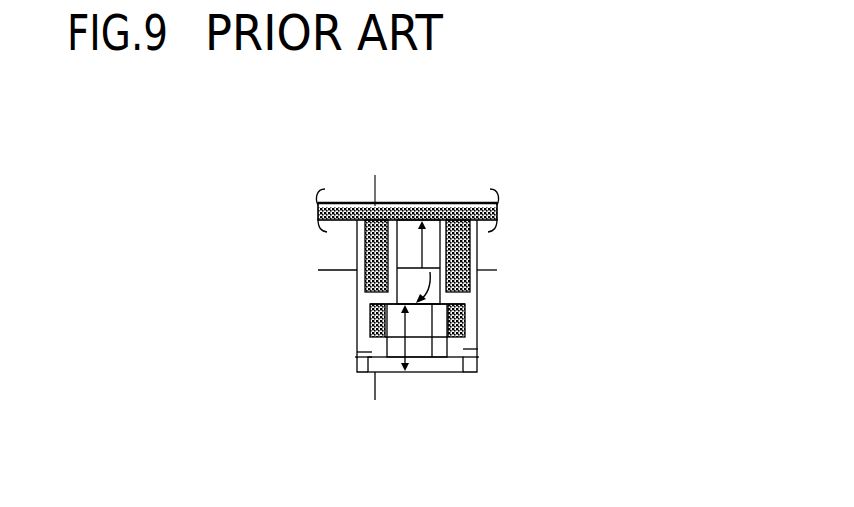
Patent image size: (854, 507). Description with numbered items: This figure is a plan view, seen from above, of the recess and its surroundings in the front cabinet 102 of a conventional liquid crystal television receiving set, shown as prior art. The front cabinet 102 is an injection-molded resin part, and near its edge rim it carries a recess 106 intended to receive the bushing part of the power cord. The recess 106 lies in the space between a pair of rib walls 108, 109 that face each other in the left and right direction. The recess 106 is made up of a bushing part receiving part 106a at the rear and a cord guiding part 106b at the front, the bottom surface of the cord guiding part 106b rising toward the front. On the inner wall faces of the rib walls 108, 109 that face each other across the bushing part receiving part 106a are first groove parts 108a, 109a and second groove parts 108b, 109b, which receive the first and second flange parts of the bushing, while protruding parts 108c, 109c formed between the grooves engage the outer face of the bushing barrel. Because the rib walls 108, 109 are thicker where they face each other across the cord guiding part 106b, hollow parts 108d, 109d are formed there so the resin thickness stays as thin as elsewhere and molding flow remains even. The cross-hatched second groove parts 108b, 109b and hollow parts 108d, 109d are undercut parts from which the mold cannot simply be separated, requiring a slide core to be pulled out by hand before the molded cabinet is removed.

The front cabinet 102 is at (425, 203).
The recess 106 is at (500, 427).
The bushing part receiving part 106a is at (392, 373).
The cord guiding part 106b is at (432, 357).
The rib wall 108 is at (357, 292).
The first groove part 108a is at (360, 370).
The second groove part 108b is at (370, 318).
The protruding part 108c is at (363, 353).
The hollow part 108d is at (365, 250).
The rib wall 109 is at (477, 292).
The first groove part 109a is at (477, 370).
The second groove part 109b is at (478, 320).
The protruding part 109c is at (478, 348).
The hollow part 109d is at (482, 257).